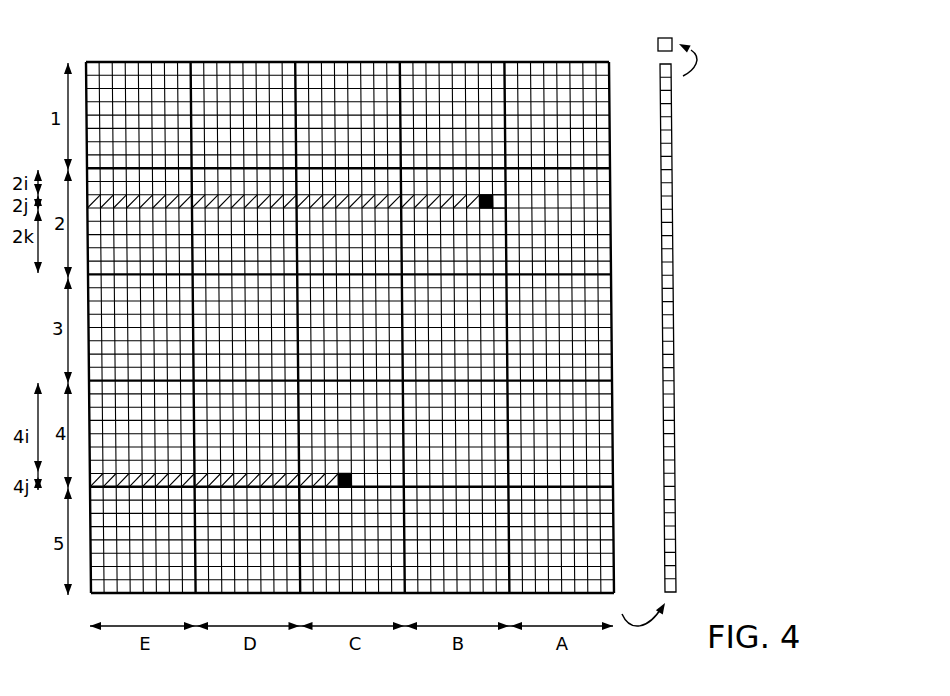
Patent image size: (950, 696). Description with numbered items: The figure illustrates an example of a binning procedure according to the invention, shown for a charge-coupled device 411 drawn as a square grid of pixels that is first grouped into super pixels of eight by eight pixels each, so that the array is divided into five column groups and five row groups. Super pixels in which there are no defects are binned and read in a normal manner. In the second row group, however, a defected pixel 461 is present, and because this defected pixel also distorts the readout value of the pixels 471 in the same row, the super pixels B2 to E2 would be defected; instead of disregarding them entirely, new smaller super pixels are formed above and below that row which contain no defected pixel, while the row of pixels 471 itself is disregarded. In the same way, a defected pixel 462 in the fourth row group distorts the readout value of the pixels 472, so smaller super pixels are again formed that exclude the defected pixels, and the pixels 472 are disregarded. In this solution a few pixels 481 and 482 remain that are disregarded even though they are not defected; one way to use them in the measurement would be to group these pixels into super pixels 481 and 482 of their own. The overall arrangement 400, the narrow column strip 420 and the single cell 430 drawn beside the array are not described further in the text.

The memory array system 400 is at (762, 330).
The charge-coupled device 411 is at (427, 61).
The column of reference cells / strip 420 is at (677, 168).
The single cell element 430 is at (656, 44).
The defected pixel 461 is at (496, 195).
The defected pixel 462 is at (347, 474).
The pixels distorted by defected pixel 471 is at (321, 194).
The pixels distorted by defected pixel 472 is at (241, 470).
The disregarded non-defected pixels 481 is at (500, 208).
The disregarded non-defected pixels 482 is at (376, 494).